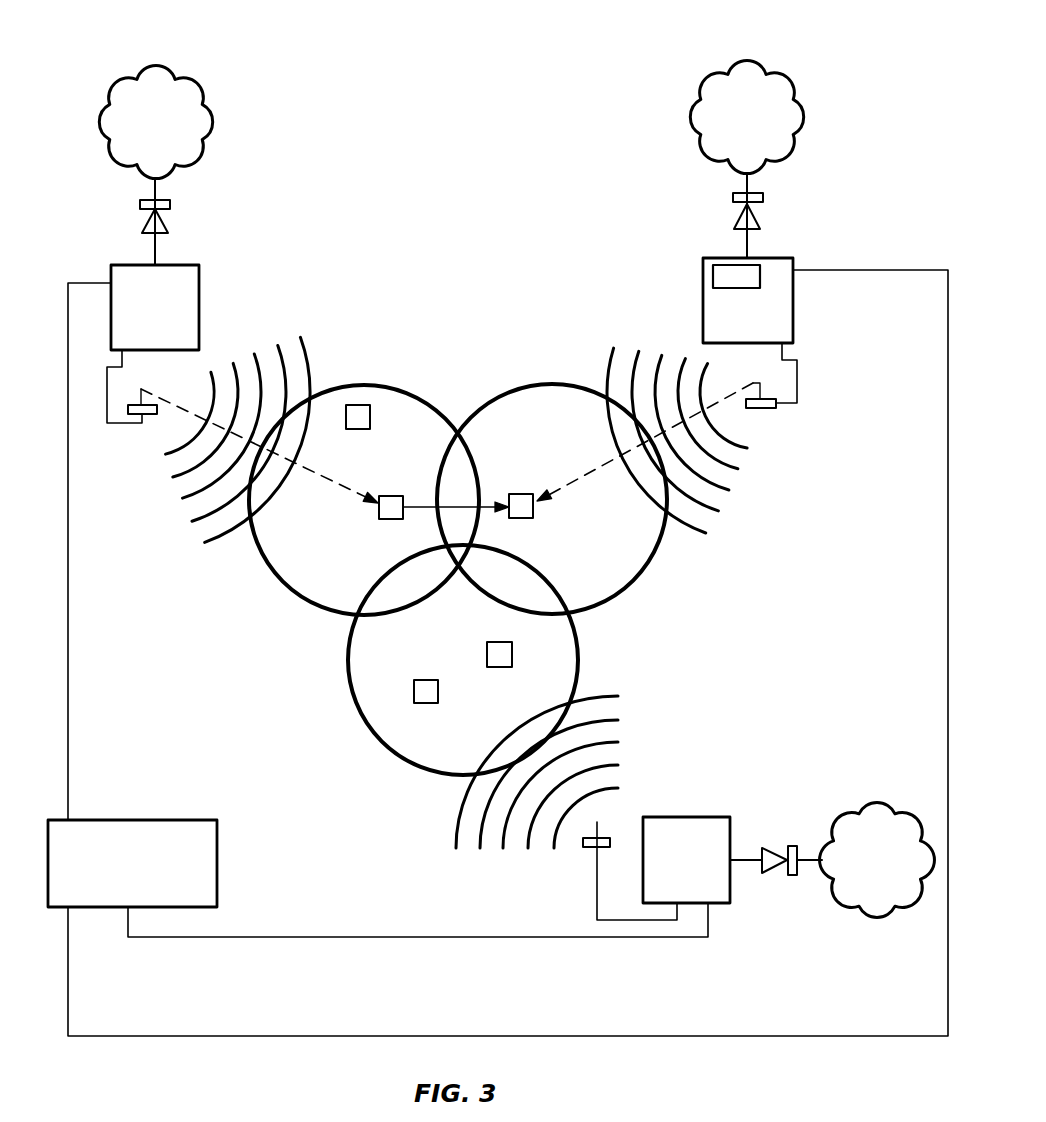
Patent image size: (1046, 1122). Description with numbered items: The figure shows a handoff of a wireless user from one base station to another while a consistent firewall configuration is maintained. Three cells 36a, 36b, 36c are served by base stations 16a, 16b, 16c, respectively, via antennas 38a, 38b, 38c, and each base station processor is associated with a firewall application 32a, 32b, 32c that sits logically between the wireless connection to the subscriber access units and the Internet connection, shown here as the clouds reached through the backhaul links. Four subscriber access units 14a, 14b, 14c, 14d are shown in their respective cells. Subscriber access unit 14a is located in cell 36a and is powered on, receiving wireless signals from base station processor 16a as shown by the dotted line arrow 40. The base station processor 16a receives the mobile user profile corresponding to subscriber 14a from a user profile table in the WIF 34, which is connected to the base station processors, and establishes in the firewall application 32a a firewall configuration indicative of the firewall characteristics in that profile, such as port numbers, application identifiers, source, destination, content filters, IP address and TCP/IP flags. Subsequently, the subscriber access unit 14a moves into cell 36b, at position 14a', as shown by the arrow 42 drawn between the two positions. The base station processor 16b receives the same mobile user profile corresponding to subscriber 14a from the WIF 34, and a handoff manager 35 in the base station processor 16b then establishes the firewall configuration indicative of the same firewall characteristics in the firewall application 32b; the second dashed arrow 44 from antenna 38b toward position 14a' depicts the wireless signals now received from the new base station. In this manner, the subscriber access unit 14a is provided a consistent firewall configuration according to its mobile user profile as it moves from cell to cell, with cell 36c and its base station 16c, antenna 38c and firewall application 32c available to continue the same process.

The firewall application 32a is at (171, 205).
The firewall application 32b is at (764, 198).
The firewall application 32c is at (788, 845).
The base station processor 16a is at (188, 264).
The base station processor 16b is at (708, 257).
The base station processor 16c is at (662, 816).
The handoff manager 35 is at (761, 272).
The WIF 34 is at (137, 819).
The antenna 38a is at (150, 414).
The antenna 38b is at (758, 409).
The antenna 38c is at (584, 848).
The cell 36a is at (280, 582).
The cell 36b is at (643, 563).
The cell 36c is at (583, 662).
The subscriber access unit 14a is at (371, 484).
The subscriber access unit position 14a' is at (563, 552).
The subscriber access unit 14b is at (433, 679).
The subscriber access unit 14c is at (492, 668).
The subscriber access unit 14d is at (355, 404).
The dotted line arrow 40 is at (313, 477).
The arrow 42 is at (488, 503).
The wireless link 44 is at (567, 487).